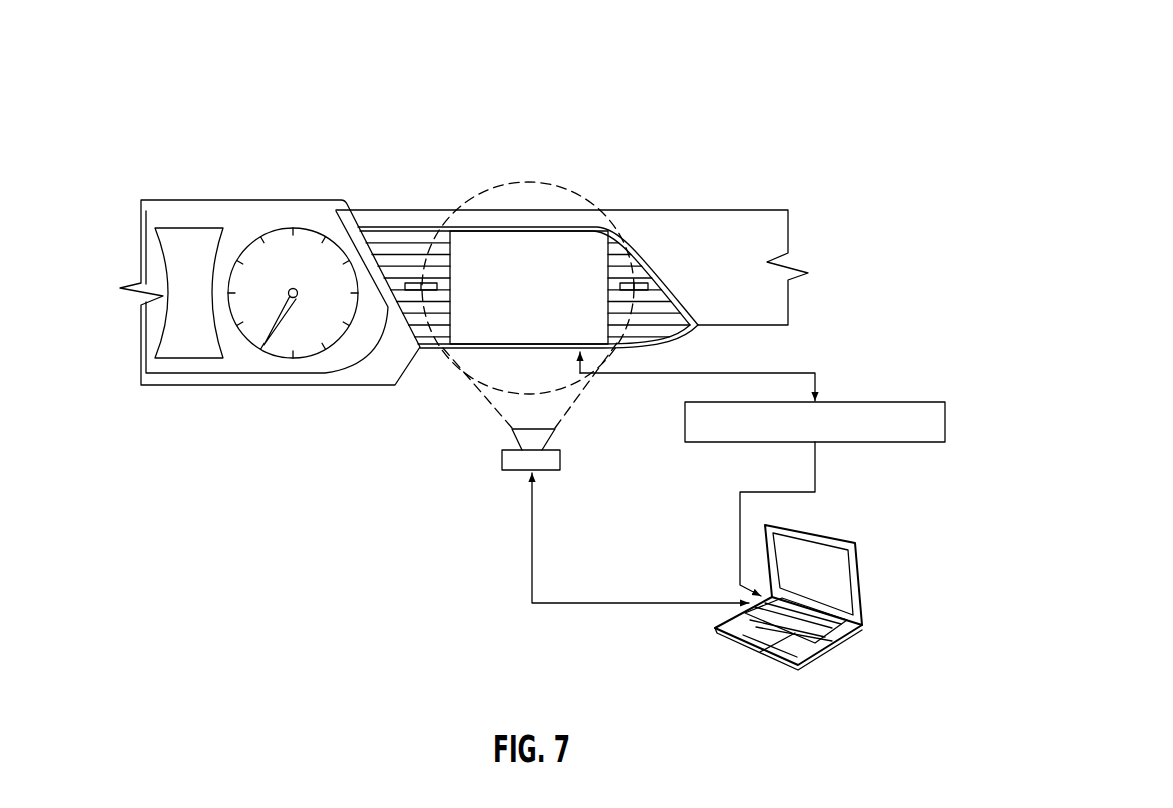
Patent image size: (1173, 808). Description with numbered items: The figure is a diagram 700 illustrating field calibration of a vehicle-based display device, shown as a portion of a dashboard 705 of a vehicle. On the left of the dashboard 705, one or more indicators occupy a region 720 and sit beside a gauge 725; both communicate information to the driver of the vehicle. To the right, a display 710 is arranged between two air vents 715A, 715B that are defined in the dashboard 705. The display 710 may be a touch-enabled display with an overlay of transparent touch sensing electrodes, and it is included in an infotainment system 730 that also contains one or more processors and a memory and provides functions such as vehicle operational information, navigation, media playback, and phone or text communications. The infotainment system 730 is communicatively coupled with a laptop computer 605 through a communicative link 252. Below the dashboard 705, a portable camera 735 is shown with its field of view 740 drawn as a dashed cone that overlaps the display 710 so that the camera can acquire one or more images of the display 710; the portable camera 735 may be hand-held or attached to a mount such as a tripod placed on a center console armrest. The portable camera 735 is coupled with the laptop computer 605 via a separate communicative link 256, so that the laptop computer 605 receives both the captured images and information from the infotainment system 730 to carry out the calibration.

The diagram 700 is at (563, 377).
The dashboard 705 is at (757, 227).
The display 710 is at (555, 249).
The air vent 715A is at (393, 239).
The air vent 715B is at (655, 306).
The region 720 is at (187, 227).
The gauge 725 is at (293, 227).
The infotainment system 730 is at (880, 402).
The portable camera 735 is at (560, 458).
The field of view 740 is at (492, 407).
The communicative link 252 is at (817, 467).
The communicative link 256 is at (533, 540).
The laptop computer 605 is at (860, 585).